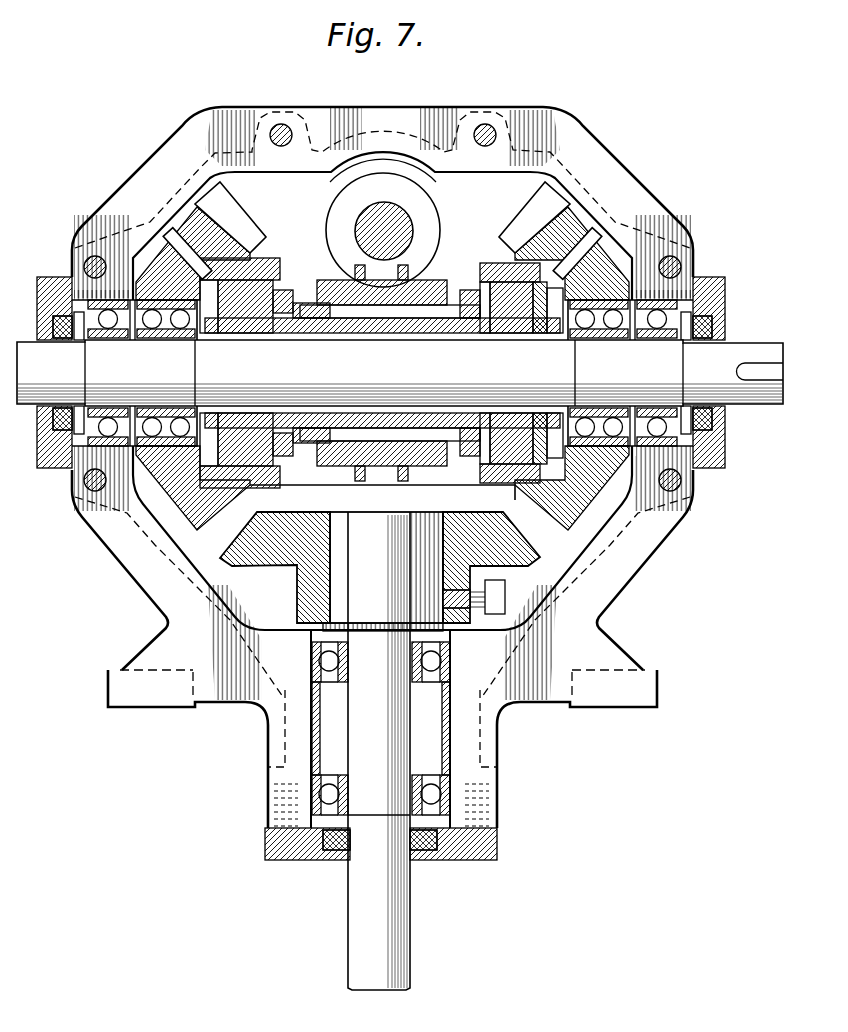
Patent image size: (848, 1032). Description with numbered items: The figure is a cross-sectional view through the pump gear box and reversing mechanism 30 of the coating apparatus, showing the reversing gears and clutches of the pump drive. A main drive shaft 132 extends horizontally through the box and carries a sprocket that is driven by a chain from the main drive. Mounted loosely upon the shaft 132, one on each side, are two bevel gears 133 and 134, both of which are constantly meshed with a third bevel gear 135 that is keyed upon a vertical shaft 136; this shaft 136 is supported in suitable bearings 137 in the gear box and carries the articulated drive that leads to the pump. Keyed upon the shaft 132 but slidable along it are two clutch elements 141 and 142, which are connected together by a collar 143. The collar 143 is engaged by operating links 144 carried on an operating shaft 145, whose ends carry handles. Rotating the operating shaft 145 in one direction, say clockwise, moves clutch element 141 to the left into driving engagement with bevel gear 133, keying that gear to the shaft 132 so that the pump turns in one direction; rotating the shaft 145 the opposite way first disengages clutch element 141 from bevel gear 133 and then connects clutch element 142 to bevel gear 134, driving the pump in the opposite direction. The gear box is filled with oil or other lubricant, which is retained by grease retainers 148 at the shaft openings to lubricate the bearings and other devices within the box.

The gear housing 30 is at (560, 104).
The shaft 132 is at (735, 350).
The bevel gear 133 is at (222, 224).
The bevel gear 134 is at (527, 240).
The bevel gear 135 is at (453, 530).
The shaft 136 is at (402, 893).
The bearings 137 is at (440, 668).
The clutch element 141 is at (256, 300).
The clutch element 142 is at (500, 292).
The collar 143 is at (323, 303).
The operating links 144 is at (427, 213).
The operating shaft 145 is at (360, 227).
The grease retainers 148 is at (55, 292).